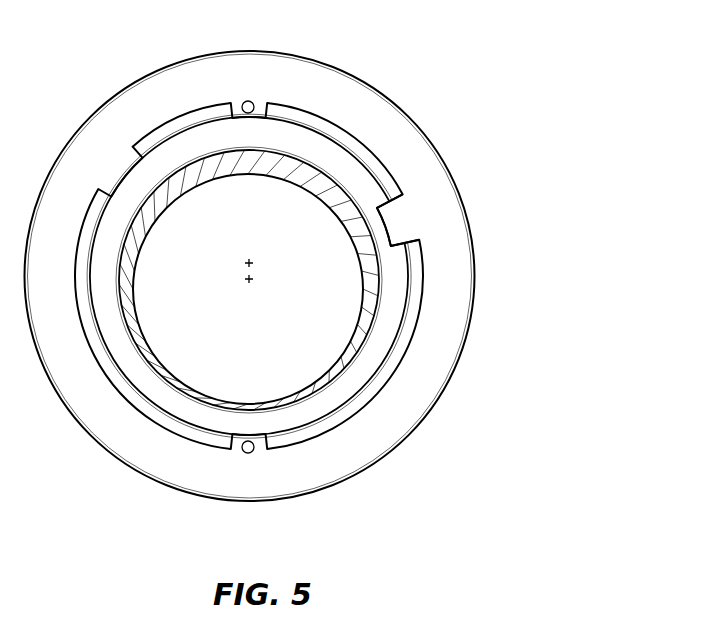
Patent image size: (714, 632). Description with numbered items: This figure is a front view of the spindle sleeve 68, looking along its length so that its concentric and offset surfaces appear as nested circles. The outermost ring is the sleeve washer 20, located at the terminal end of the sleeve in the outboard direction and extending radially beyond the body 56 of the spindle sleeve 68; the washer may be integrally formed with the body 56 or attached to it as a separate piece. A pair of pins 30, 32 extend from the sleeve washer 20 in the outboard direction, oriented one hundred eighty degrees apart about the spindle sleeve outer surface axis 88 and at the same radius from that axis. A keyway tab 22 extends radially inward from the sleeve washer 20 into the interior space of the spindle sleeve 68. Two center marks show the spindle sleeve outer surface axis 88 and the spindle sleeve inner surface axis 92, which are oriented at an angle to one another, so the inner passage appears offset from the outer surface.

The spindle sleeve 68 is at (488, 47).
The sleeve washer 20 is at (402, 131).
The keyway tab 22 is at (395, 228).
The pin 30 is at (250, 100).
The pin 32 is at (250, 453).
The body 56 is at (330, 165).
The spindle sleeve outer surface axis 88 is at (251, 281).
The spindle sleeve inner surface axis 92 is at (246, 262).